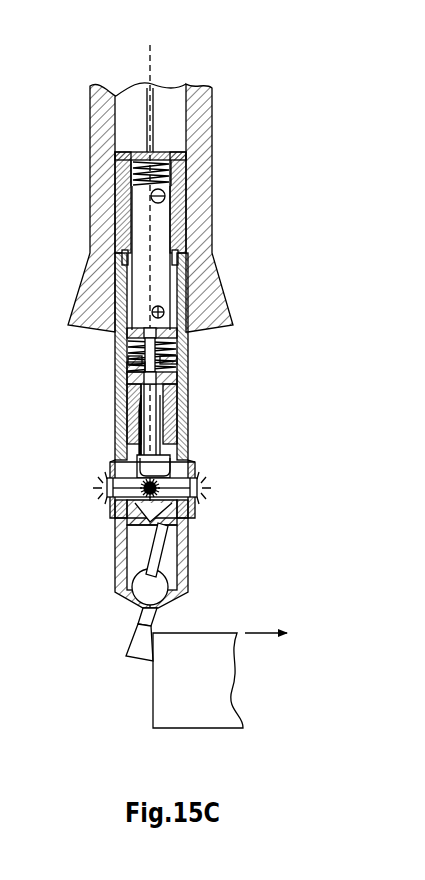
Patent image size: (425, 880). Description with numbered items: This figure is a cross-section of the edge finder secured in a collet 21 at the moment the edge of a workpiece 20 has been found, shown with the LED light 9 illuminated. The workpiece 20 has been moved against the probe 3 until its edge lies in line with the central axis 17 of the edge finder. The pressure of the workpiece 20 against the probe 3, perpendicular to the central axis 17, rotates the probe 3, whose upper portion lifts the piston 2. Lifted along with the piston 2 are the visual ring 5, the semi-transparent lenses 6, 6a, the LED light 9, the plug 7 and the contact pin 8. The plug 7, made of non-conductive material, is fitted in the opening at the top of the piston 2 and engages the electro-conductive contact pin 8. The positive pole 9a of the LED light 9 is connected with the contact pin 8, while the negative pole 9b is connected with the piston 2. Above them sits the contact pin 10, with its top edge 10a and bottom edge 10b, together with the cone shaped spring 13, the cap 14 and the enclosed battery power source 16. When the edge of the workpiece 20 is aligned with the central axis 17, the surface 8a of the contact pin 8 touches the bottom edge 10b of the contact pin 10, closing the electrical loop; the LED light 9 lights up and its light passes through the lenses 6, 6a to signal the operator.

The central axis 17 is at (151, 46).
The collet 21 is at (216, 126).
The cap 14 is at (116, 166).
The cone shaped spring 13 is at (173, 172).
The power source (battery) 16 is at (163, 210).
The top edge of contact pin 10a is at (116, 326).
The contact pin 10 is at (128, 348).
The bottom edge of contact pin 10b is at (180, 360).
The plug 7 is at (178, 376).
The surface of contact pin 8a is at (130, 366).
The piston 2 is at (183, 401).
The contact pin 8 is at (141, 401).
The positive pole 9a is at (172, 425).
The negative pole 9b is at (139, 432).
The LED light 9 is at (170, 457).
The visual ring 5 is at (109, 466).
The semi-transparent lens 6 is at (106, 491).
The semi-transparent lens 6a is at (200, 489).
The probe 3 is at (123, 645).
The workpiece 20 is at (142, 708).